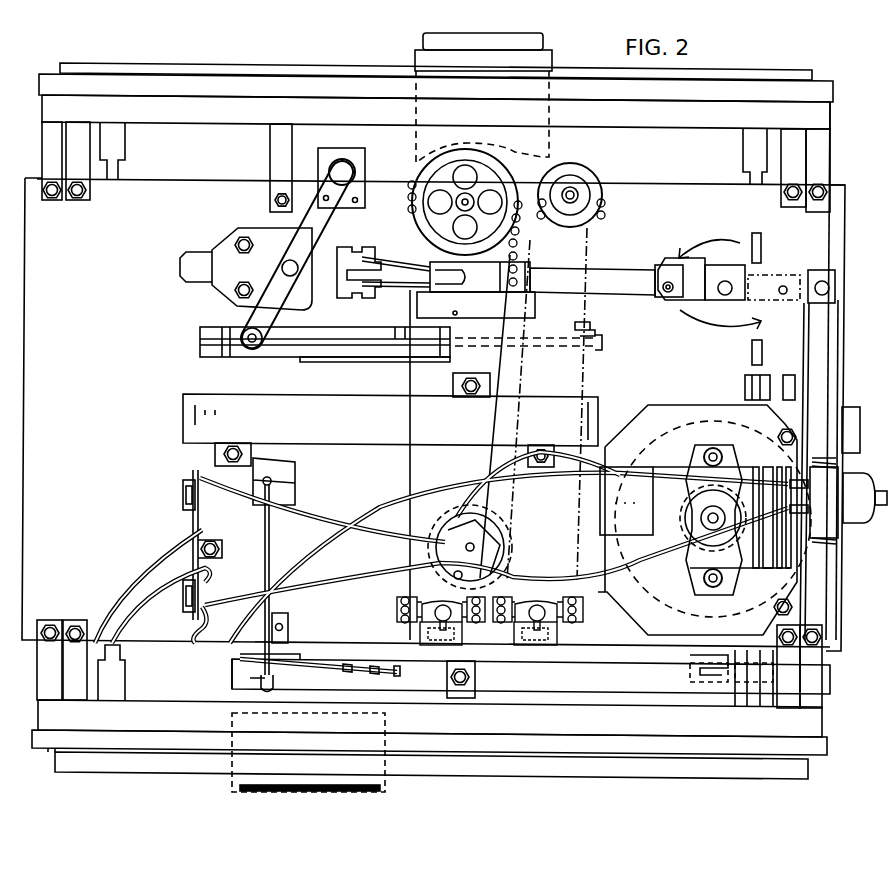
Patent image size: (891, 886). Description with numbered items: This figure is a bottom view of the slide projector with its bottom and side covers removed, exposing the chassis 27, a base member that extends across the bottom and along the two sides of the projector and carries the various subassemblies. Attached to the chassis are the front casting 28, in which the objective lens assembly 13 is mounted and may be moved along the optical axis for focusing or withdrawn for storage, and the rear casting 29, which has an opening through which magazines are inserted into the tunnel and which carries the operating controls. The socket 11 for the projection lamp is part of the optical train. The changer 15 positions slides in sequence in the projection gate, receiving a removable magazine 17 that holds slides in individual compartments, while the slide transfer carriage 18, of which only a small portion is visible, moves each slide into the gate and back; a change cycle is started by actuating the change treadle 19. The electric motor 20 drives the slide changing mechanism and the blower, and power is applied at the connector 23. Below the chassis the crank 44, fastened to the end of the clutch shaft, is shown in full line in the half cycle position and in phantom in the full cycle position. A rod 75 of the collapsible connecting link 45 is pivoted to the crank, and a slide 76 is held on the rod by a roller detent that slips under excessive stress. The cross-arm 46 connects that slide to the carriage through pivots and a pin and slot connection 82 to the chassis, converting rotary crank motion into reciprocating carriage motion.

The socket 11 is at (455, 520).
The objective lens assembly 13 is at (421, 46).
The changer 15 is at (222, 310).
The removable magazine 17 is at (232, 782).
The slide transfer carriage 18 is at (280, 345).
The change treadle 19 is at (800, 772).
The electric motor 20 is at (700, 462).
The connector 23 is at (833, 515).
The chassis 27 is at (838, 247).
The front casting 28 is at (822, 77).
The rear casting 29 is at (818, 748).
The crank 44 is at (729, 283).
The collapsible connecting link 45 is at (346, 244).
The cross-arm 46 is at (300, 228).
The rod 75 is at (622, 272).
The slide 76 is at (226, 245).
The pin and slot connection 82 is at (350, 162).